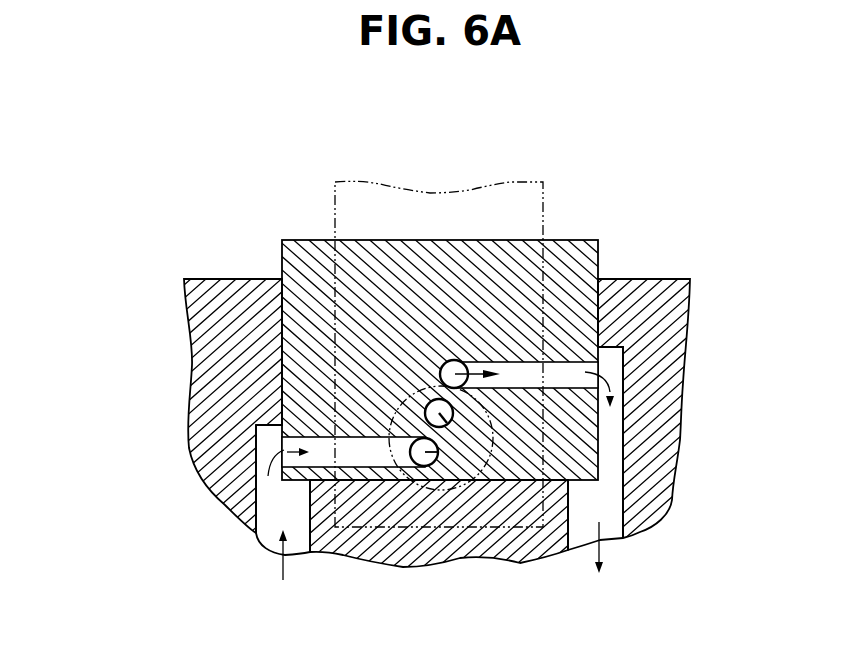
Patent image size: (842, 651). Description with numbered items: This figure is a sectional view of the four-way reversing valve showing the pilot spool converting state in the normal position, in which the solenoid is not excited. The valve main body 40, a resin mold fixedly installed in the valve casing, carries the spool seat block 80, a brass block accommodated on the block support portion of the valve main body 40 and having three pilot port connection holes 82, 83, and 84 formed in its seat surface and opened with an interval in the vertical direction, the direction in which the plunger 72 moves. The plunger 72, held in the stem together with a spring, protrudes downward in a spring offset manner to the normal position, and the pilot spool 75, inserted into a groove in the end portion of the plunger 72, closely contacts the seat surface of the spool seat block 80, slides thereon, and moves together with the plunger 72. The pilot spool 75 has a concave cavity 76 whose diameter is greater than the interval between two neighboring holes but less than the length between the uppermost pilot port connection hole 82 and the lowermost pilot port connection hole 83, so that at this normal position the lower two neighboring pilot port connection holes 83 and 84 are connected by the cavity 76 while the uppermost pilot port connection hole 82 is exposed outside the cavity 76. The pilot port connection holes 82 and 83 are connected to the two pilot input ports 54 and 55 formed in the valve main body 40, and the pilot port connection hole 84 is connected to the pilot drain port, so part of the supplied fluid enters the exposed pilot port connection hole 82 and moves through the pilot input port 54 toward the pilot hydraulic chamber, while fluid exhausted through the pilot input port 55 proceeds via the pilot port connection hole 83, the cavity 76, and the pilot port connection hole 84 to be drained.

The valve main body 40 is at (172, 432).
The pilot input port 54 is at (612, 532).
The pilot input port 55 is at (270, 540).
The plunger 72 is at (455, 192).
The pilot spool 75 is at (472, 468).
The cavity 76 is at (466, 462).
The spool seat block 80 is at (587, 232).
The pilot port connection hole 82 is at (572, 372).
The pilot port connection hole 83 is at (370, 455).
The pilot port connection hole 84 is at (442, 415).